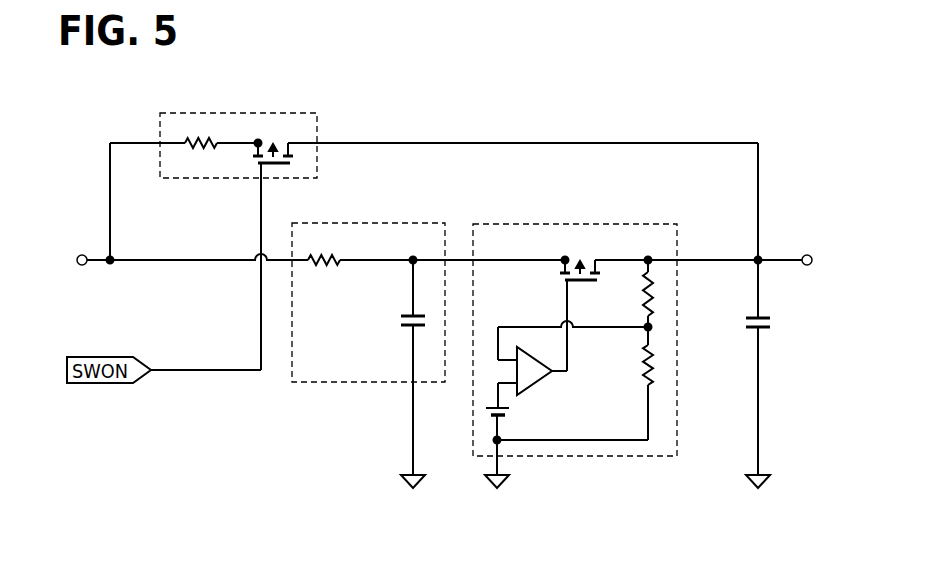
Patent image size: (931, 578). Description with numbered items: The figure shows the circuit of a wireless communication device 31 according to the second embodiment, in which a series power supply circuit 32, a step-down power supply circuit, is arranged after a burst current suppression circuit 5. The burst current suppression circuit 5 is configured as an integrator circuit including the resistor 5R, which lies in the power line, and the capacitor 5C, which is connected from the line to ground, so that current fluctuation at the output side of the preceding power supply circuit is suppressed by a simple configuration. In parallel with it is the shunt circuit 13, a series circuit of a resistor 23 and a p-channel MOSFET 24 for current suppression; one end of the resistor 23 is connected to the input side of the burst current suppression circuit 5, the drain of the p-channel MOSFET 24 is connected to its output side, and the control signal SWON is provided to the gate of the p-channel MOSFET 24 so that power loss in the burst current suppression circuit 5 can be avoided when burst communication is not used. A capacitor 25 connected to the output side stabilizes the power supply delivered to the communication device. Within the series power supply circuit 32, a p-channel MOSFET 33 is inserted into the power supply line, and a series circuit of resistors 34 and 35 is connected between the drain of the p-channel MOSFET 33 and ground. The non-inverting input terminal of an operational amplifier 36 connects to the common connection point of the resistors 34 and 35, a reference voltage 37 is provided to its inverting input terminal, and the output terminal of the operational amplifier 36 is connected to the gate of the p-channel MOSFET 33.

The shunt circuit 13 is at (317, 122).
The resistor 23 is at (205, 150).
The p-channel MOSFET 24 is at (272, 166).
The burst current suppression circuit 5 is at (383, 222).
The resistor 5R is at (315, 268).
The capacitor 5C is at (400, 318).
The series power supply circuit 32 is at (553, 222).
The p-channel MOSFET 33 is at (562, 266).
The resistor 34 is at (641, 301).
The resistor 35 is at (641, 367).
The operational amplifier 36 is at (546, 382).
The reference voltage 37 is at (512, 412).
The capacitor 25 is at (745, 323).
The wireless communication device 31 is at (686, 92).